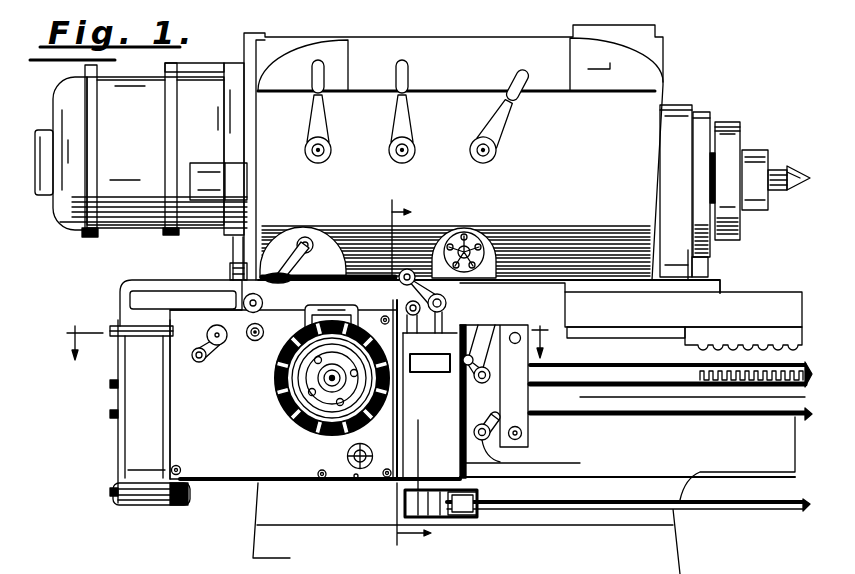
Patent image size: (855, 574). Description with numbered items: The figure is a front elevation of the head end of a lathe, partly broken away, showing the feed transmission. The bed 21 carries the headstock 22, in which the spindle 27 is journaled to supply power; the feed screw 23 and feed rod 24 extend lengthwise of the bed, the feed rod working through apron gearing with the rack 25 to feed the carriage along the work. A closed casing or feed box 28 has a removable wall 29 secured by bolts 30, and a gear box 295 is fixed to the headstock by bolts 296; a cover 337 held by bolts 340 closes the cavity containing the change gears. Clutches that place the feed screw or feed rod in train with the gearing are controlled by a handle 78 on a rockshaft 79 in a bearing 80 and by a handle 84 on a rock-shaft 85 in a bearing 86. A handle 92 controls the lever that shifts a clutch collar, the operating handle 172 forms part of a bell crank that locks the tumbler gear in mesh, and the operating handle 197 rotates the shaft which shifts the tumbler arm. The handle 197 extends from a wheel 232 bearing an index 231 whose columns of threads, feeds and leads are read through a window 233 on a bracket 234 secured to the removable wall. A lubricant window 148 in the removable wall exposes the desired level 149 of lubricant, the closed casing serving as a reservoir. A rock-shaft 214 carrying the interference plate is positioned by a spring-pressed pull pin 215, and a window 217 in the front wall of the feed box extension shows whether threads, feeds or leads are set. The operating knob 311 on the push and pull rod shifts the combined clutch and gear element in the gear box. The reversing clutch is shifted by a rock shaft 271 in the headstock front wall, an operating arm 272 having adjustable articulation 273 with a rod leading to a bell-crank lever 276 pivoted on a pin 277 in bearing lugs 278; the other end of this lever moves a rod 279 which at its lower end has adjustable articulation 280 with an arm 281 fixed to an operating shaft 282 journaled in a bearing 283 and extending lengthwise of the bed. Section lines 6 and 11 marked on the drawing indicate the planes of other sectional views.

The headstock 22 is at (640, 103).
The spindle 27 is at (757, 150).
The rack 25 is at (744, 338).
The feed screw 23 is at (612, 372).
The feed rod 24 is at (675, 405).
The bed 21 is at (748, 458).
The operating shaft 282 is at (577, 498).
The adjustable articulation 280 is at (455, 518).
The bearing 283 is at (478, 500).
The arm 281 is at (420, 490).
The removable wall 29 is at (278, 483).
The casing 28 is at (215, 483).
The bolts 30 is at (180, 471).
The cover 337 is at (135, 438).
The bolts 340 is at (113, 494).
The operating knob 311 is at (108, 382).
The section line 11 is at (316, 353).
The section line 6 is at (417, 375).
The gear box 295 is at (182, 291).
The bolts 296 is at (233, 271).
The operating handle 172 is at (221, 350).
The handle 92 is at (256, 341).
The window 233 is at (262, 331).
The index 231 is at (283, 393).
The wheel 232 is at (300, 421).
The lubricant level 149 is at (348, 455).
The lubricant window 148 is at (356, 483).
The rock shaft 271 is at (309, 236).
The adjustable articulation 273 is at (280, 267).
The operating arm 272 is at (331, 240).
The rock-shaft 214 is at (338, 281).
The bracket 234 is at (346, 306).
The spring-pressed pull pin 215 is at (442, 300).
The bell-crank lever 276 is at (466, 306).
The bearing lugs 278 is at (512, 316).
The pin 277 is at (406, 333).
The rod 279 is at (436, 334).
The window 217 is at (438, 373).
The operating handle 197 is at (396, 382).
The handle 78 is at (474, 332).
The rockshaft 79 is at (497, 339).
The bearing 80 is at (481, 384).
The handle 84 is at (500, 418).
The rock-shaft 85 is at (490, 436).
The bearing 86 is at (506, 457).